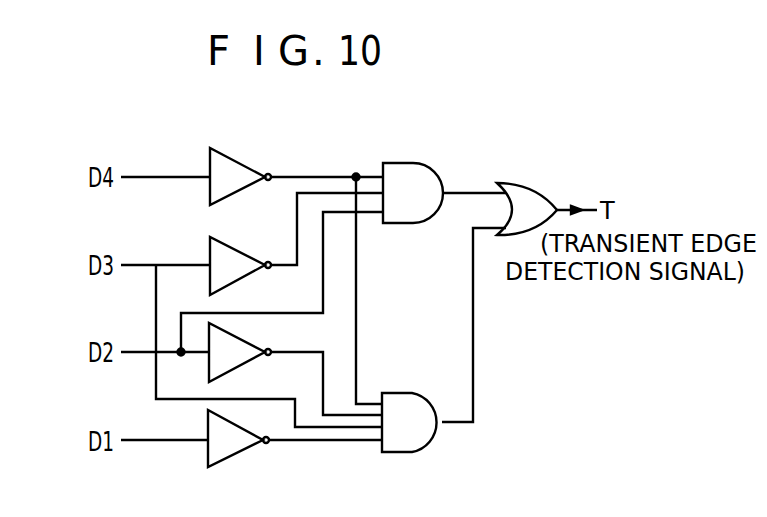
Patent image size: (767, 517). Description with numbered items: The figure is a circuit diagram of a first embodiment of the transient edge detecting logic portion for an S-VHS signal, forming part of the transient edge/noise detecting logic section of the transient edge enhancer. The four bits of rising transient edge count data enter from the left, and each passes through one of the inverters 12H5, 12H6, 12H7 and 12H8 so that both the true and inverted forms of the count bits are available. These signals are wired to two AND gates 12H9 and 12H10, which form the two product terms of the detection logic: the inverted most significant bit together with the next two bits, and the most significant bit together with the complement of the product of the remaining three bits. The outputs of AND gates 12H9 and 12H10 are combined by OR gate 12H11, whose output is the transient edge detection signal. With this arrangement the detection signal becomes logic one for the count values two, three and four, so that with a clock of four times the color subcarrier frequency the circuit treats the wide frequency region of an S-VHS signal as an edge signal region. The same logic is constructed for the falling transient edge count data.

The inverter 12H5 is at (236, 160).
The inverter 12H6 is at (238, 248).
The inverter 12H7 is at (257, 325).
The inverter 12H8 is at (238, 411).
The AND gate 12H9 is at (410, 223).
The AND gate 12H10 is at (407, 393).
The OR gate 12H11 is at (533, 184).